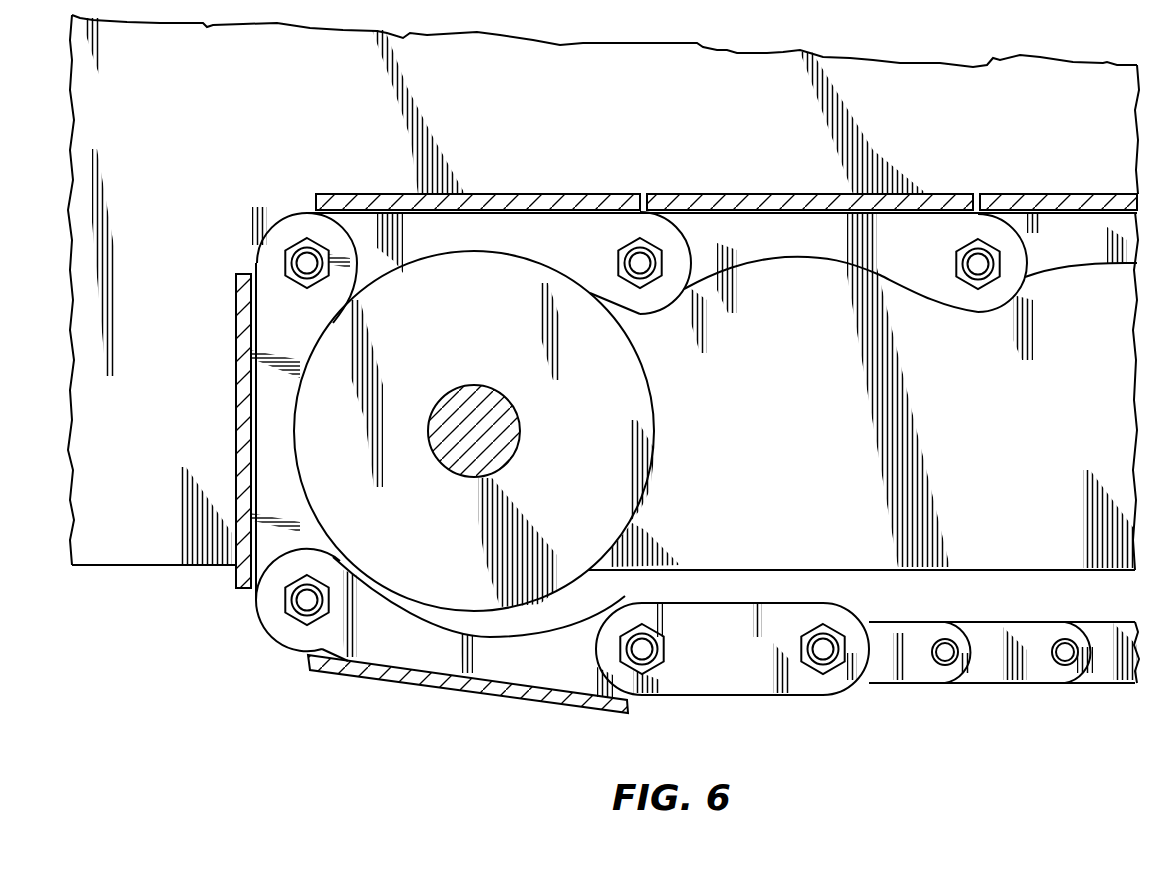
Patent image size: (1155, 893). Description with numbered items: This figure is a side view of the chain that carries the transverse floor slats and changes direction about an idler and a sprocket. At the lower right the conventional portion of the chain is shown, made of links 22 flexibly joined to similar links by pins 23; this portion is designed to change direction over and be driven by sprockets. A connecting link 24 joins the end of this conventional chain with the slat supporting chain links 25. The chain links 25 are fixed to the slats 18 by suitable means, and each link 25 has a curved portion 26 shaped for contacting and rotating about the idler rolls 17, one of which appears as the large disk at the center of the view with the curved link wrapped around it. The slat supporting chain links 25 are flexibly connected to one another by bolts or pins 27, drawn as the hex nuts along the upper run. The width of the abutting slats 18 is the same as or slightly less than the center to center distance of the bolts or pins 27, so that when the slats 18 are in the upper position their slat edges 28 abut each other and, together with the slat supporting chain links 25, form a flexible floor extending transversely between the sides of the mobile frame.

The idler roll 17 is at (620, 410).
The slat 18 is at (530, 196).
The link 22 is at (1012, 623).
The pin 23 is at (950, 658).
The connecting link 24 is at (788, 614).
The slat supporting chain link 25 is at (262, 421).
The curved portion 26 is at (588, 601).
The bolt or pin 27 is at (967, 283).
The slat edge 28 is at (644, 196).